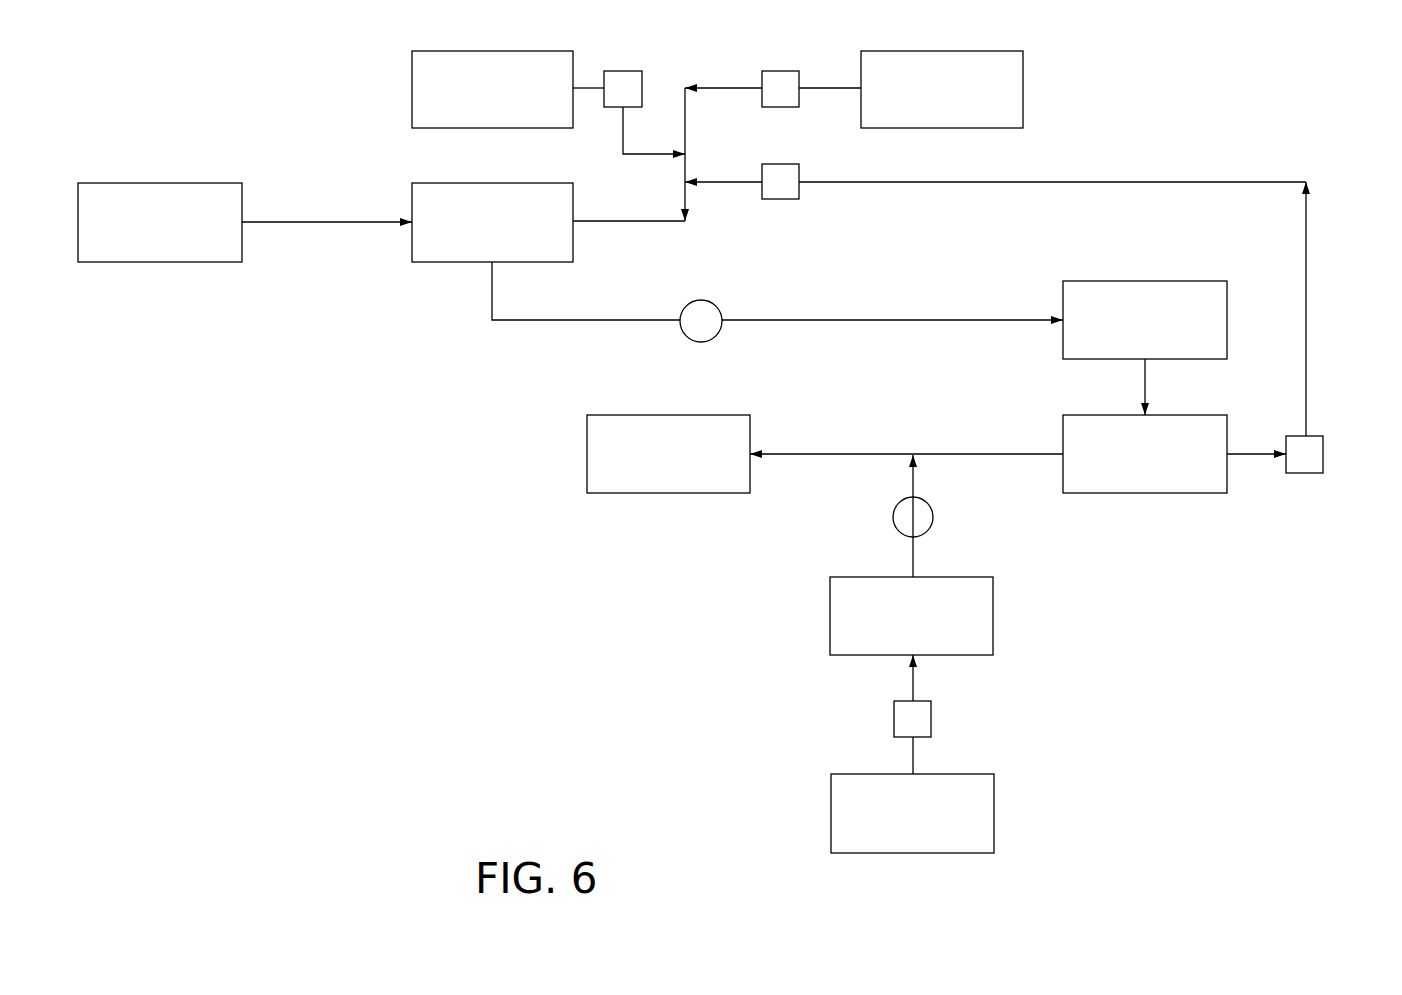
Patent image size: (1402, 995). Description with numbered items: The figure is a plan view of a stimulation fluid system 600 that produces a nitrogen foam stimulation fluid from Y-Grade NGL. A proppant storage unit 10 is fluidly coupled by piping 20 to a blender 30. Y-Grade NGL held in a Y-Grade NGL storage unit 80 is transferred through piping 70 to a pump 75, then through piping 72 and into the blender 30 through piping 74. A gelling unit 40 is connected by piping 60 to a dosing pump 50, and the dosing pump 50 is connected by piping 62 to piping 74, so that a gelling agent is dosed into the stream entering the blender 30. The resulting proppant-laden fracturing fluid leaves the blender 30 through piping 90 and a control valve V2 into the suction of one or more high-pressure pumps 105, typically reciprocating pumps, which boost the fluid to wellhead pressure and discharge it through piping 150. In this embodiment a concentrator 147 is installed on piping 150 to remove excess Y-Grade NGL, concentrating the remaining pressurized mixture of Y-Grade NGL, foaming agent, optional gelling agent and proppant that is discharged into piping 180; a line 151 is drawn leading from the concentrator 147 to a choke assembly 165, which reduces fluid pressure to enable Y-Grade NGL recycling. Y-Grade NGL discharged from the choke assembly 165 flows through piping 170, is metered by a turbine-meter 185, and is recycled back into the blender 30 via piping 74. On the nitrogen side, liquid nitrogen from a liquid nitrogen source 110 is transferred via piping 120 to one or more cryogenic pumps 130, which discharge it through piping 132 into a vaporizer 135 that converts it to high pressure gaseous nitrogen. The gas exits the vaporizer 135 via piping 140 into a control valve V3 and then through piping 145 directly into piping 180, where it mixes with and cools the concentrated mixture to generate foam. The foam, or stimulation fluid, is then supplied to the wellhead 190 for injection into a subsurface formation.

The stimulation fluid system 600 is at (343, 403).
The proppant storage unit 10 is at (182, 183).
The piping 20 is at (314, 223).
The blender 30 is at (512, 183).
The gelling unit 40 is at (518, 51).
The dosing pump 50 is at (623, 71).
The piping 60 is at (592, 88).
The piping 62 is at (641, 154).
The piping 74 is at (600, 222).
The pump 75 is at (781, 71).
The piping 72 is at (735, 88).
The piping 70 is at (830, 88).
The Y-Grade NGL storage unit 80 is at (963, 51).
The turbine-meter 185 is at (785, 199).
The piping 170 is at (1306, 231).
The choke assembly 165 is at (1312, 436).
The piping 90 is at (492, 299).
The control valve V2 is at (705, 301).
The high-pressure pumps 105 is at (1150, 281).
The piping 150 is at (1145, 375).
The concentrator 147 is at (1150, 493).
The signal line 151 is at (1250, 455).
The piping 180 is at (820, 455).
The wellhead 190 is at (676, 415).
The piping 145 is at (910, 486).
The control valve V3 is at (933, 517).
The piping 140 is at (910, 551).
The vaporizer 135 is at (952, 577).
The piping 132 is at (910, 680).
The cryogenic pumps 130 is at (931, 717).
The piping 120 is at (913, 755).
The liquid nitrogen source 110 is at (915, 853).